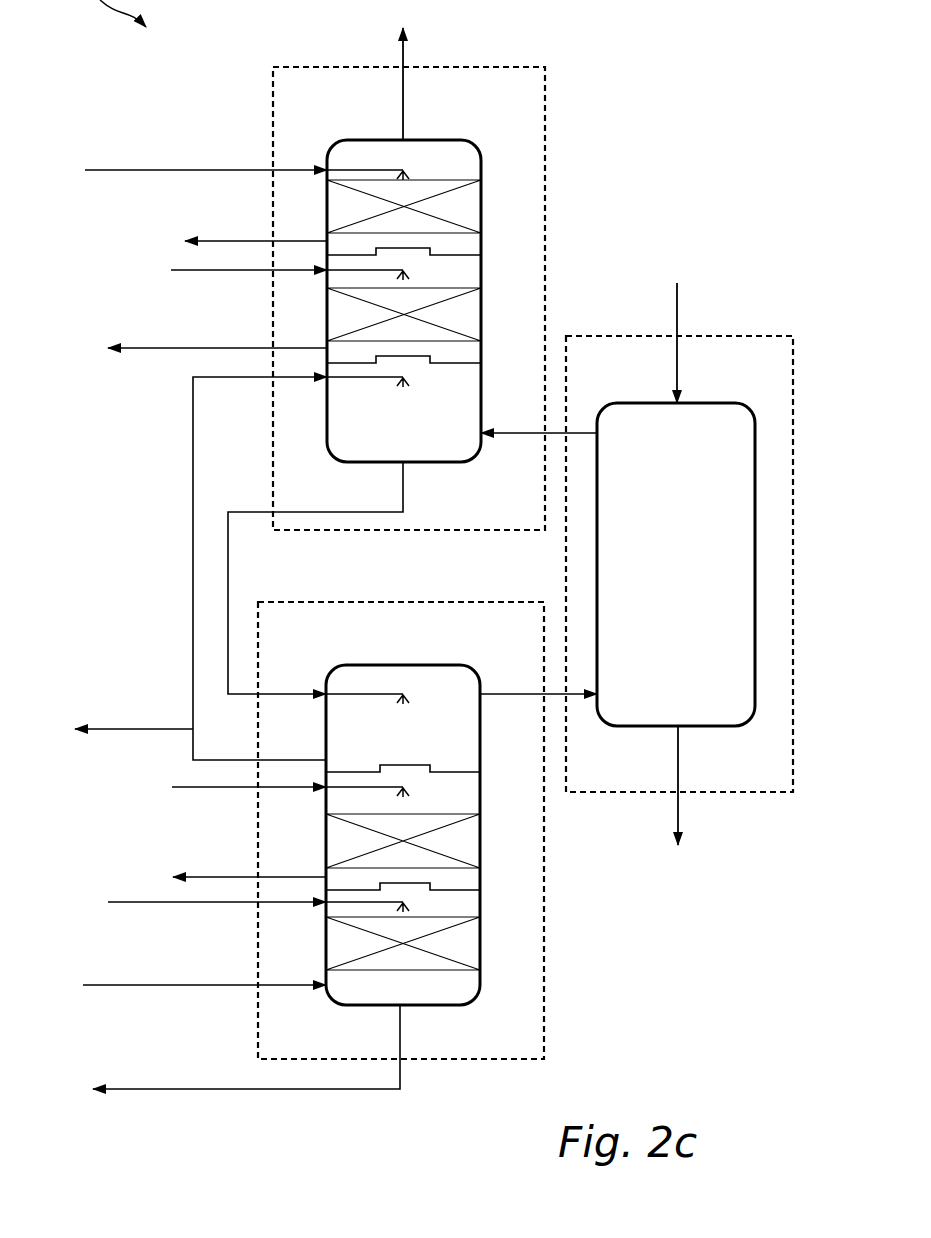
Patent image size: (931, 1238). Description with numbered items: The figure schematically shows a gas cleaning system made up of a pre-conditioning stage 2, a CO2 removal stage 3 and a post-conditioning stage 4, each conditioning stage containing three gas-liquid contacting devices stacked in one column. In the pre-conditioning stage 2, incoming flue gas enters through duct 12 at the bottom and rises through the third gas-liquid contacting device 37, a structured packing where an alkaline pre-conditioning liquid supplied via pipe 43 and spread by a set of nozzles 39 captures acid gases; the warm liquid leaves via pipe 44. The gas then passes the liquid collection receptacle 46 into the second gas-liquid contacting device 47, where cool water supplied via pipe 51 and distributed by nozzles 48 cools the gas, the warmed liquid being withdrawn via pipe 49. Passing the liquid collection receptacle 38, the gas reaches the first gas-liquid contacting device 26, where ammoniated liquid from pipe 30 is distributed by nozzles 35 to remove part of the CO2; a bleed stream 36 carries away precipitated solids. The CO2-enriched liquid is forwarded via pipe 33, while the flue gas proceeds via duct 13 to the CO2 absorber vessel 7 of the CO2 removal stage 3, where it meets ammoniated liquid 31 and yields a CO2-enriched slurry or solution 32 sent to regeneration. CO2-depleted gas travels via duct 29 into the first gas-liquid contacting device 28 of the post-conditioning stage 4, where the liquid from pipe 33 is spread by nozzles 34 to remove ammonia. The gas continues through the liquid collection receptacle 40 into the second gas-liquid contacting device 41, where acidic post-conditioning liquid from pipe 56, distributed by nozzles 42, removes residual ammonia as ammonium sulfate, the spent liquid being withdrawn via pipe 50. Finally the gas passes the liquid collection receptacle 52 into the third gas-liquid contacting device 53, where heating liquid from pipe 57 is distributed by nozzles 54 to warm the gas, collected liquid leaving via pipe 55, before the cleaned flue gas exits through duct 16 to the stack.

The pre-conditioning stage 2 is at (548, 942).
The CO2 removal stage 3 is at (740, 335).
The post-conditioning stage 4 is at (555, 132).
The CO2 absorber vessel 7 is at (752, 590).
The duct 12 is at (100, 985).
The duct 13 is at (515, 692).
The duct 16 is at (406, 112).
The first gas-liquid contacting device 26 is at (447, 733).
The first gas-liquid contacting device 28 is at (437, 436).
The duct 29 is at (527, 432).
The pipe 30 is at (232, 562).
The ammoniated liquid 31 is at (675, 315).
The CO2-enriched slurry or solution 32 is at (680, 818).
The pipe 33 is at (195, 433).
The set of nozzles 34 is at (360, 379).
The set of nozzles 35 is at (368, 692).
The bleed stream 36 is at (140, 729).
The third gas-liquid contacting device 37 is at (463, 950).
The liquid collection receptacle 38 is at (455, 773).
The set of nozzles 39 is at (405, 900).
The liquid collection receptacle 40 is at (470, 362).
The second gas-liquid contacting device 41 is at (472, 318).
The set of nozzles 42 is at (465, 272).
The pipe 43 is at (185, 903).
The pipe 44 is at (160, 1090).
The liquid collection receptacle 46 is at (458, 890).
The second gas-liquid contacting device 47 is at (463, 845).
The set of nozzles 48 is at (410, 788).
The pipe 49 is at (232, 877).
The pipe 50 is at (140, 350).
The pipe 51 is at (175, 787).
The liquid collection receptacle 52 is at (463, 255).
The third gas-liquid contacting device 53 is at (470, 212).
The set of nozzles 54 is at (383, 165).
The pipe 55 is at (245, 240).
The pipe 56 is at (212, 272).
The pipe 57 is at (168, 170).